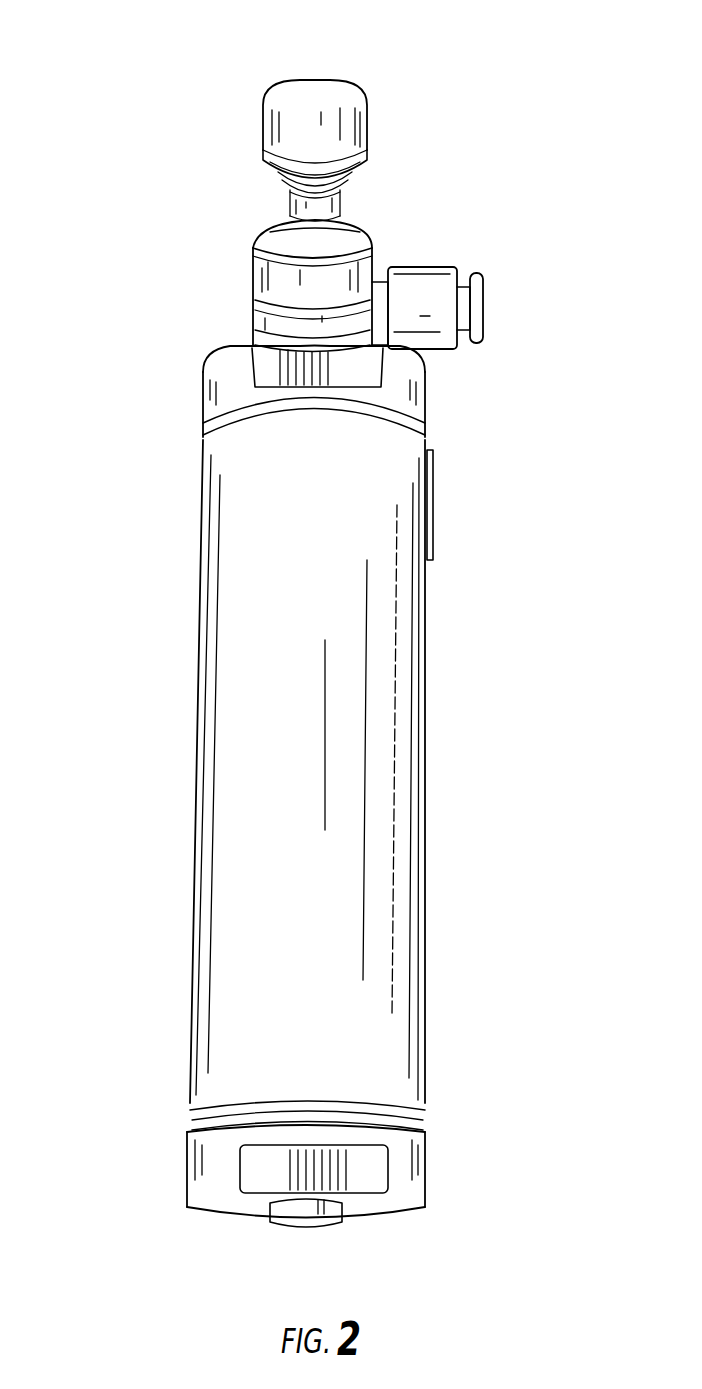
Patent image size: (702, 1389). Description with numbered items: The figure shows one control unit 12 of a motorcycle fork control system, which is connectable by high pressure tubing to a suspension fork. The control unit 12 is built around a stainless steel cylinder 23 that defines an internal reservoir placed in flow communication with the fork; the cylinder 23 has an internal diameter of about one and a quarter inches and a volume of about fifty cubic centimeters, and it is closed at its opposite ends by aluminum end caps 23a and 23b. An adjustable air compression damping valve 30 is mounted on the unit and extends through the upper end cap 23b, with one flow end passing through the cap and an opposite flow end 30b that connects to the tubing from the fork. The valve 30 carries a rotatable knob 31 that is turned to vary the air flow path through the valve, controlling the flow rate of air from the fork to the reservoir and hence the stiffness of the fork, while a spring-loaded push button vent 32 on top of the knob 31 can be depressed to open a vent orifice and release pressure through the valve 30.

The control unit 12 is at (118, 604).
The cylinder 23 is at (424, 787).
The end cap 23a is at (426, 1172).
The end cap 23b is at (427, 400).
The adjustable air compression damping valve 30 is at (412, 240).
The flow end 30b is at (488, 307).
The rotatable knob 31 is at (366, 146).
The spring-loaded push button vent 32 is at (318, 60).